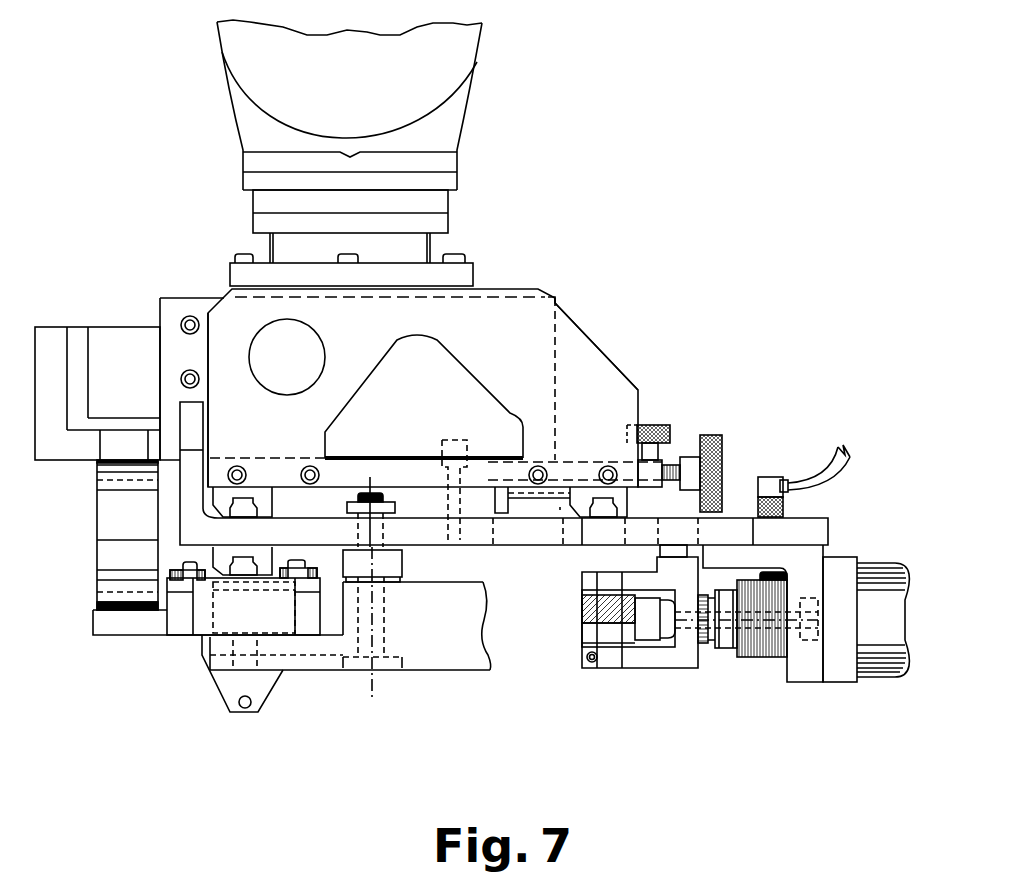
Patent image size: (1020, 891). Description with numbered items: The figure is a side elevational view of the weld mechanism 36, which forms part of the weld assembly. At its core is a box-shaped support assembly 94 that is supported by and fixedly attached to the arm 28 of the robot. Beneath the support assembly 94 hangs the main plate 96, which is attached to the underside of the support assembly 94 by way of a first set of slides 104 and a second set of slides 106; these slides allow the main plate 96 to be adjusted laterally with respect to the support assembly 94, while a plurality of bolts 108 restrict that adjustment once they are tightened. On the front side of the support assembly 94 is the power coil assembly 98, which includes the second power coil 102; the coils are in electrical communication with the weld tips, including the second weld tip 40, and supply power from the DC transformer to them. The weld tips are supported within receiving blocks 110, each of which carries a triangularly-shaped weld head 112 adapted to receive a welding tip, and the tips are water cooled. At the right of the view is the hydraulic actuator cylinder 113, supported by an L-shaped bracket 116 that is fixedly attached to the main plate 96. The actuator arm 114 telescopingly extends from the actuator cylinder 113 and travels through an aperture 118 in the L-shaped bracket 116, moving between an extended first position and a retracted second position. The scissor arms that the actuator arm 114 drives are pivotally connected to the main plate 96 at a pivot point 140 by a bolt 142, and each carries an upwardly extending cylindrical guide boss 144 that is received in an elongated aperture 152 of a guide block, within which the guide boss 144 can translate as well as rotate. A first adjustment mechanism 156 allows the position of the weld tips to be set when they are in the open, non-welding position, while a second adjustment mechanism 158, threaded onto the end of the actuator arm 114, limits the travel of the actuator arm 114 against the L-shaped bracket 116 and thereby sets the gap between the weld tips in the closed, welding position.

The arm 28 is at (462, 133).
The support assembly 94 is at (500, 283).
The weld mechanism 36 is at (614, 322).
The power coil assembly 98 is at (121, 321).
The second power coil 102 is at (104, 530).
The receiving block 110 is at (130, 636).
The main plate 96 is at (832, 523).
The first set of slides 104 is at (263, 498).
The second set of slides 106 is at (580, 493).
The bolts 108 is at (447, 440).
The pivot point 140 is at (373, 692).
The bolt 142 is at (387, 670).
The elongated aperture 152 is at (207, 610).
The guide boss 144 is at (205, 625).
The weld head 112 is at (275, 690).
The second weld tip 40 is at (246, 708).
The first adjustment mechanism 156 is at (706, 409).
The L-shaped bracket 116 is at (833, 568).
The aperture 118 is at (790, 657).
The actuator arm 114 is at (808, 645).
The second adjustment mechanism 158 is at (730, 674).
The hydraulic actuator cylinder 113 is at (888, 681).